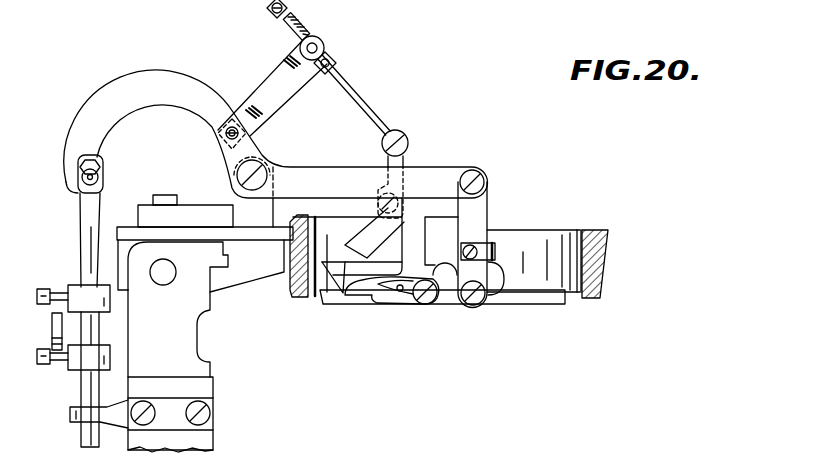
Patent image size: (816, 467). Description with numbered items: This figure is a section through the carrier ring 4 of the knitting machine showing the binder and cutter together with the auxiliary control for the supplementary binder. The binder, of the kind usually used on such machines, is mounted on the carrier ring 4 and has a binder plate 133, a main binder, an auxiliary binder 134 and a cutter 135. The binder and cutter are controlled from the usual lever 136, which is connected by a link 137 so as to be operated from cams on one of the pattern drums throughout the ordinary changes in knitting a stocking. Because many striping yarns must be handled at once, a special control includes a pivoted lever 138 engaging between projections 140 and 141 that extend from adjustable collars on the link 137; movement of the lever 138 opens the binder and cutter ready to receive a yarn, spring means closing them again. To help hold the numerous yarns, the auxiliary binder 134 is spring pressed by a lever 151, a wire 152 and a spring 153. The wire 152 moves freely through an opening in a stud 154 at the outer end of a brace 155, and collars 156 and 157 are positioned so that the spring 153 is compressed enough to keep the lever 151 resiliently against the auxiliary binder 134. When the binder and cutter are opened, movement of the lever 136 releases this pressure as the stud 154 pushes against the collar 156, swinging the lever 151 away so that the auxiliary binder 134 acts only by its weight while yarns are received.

The carrier ring 4 is at (599, 222).
The binder plate 133 is at (512, 303).
The auxiliary binder 134 is at (327, 263).
The cutter 135 is at (374, 306).
The lever 136 is at (171, 86).
The link 137 is at (82, 437).
The lever 138 is at (53, 333).
The projection 140 is at (54, 289).
The projection 141 is at (53, 367).
The lever 151 is at (358, 246).
The wire 152 is at (350, 88).
The spring 153 is at (303, 25).
The stud 154 is at (327, 44).
The brace 155 is at (275, 97).
The collar 156 is at (337, 63).
The collar 157 is at (288, 5).